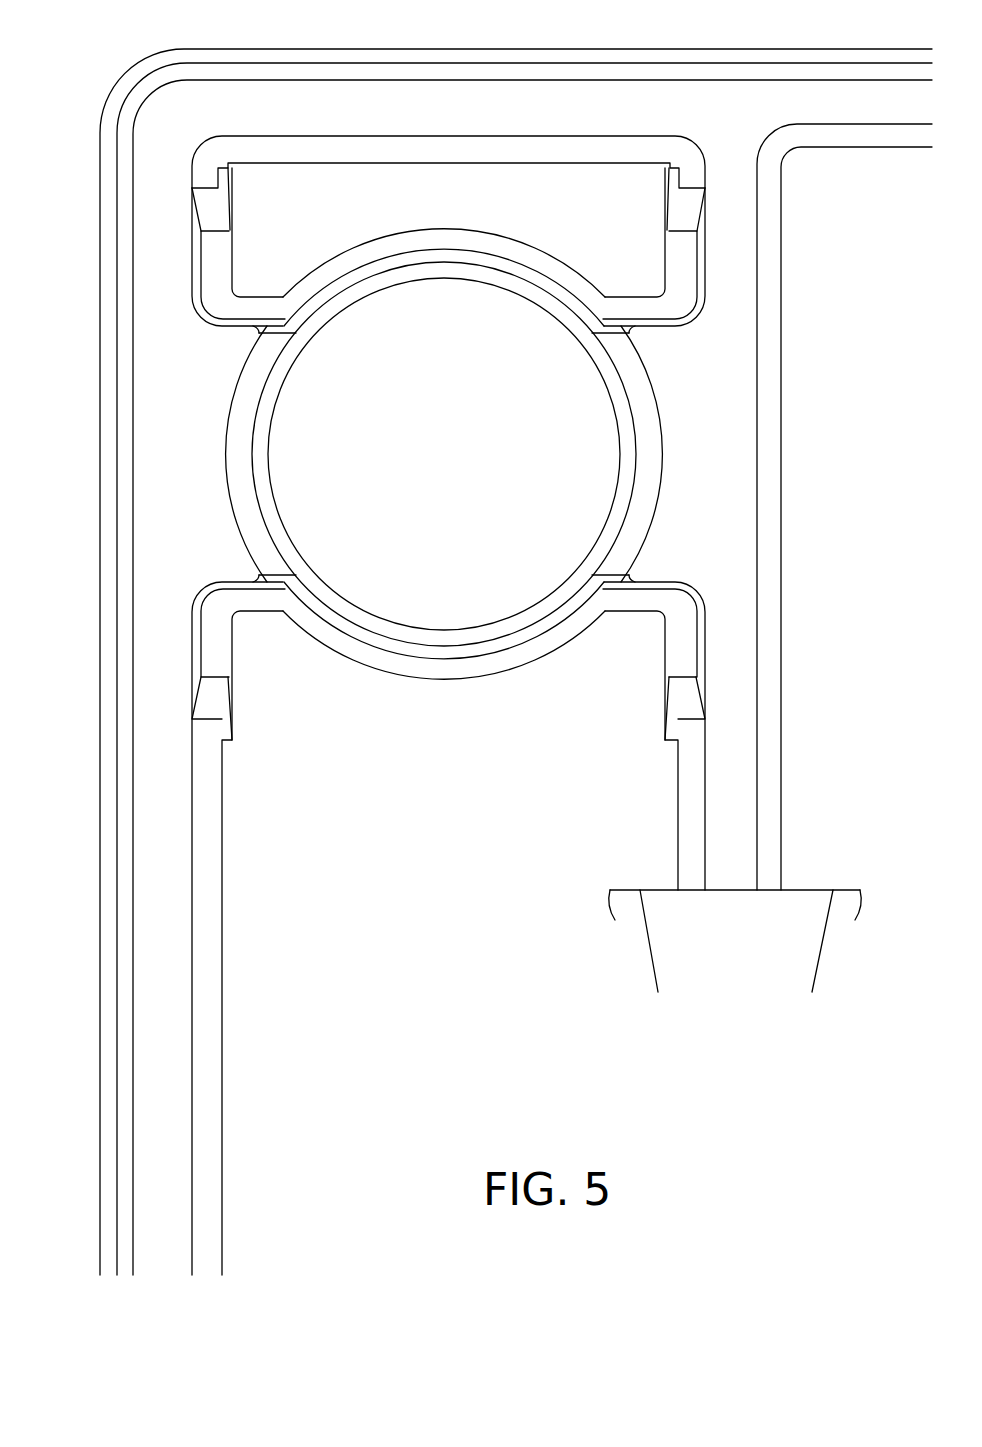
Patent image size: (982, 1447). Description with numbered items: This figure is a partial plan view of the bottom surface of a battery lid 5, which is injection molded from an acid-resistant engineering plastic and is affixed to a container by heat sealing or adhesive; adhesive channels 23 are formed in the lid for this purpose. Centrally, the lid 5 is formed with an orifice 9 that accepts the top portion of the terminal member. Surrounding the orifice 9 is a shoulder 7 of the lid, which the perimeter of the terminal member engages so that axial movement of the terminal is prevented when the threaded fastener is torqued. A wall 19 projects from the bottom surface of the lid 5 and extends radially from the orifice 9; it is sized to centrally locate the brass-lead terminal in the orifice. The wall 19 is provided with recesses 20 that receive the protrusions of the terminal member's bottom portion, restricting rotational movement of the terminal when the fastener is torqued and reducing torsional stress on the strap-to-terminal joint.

The lid 5 is at (128, 74).
The adhesive channels 23 is at (578, 120).
The wall 19 is at (442, 255).
The recesses 20 is at (665, 455).
The shoulder 7 is at (262, 497).
The orifice 9 is at (430, 453).